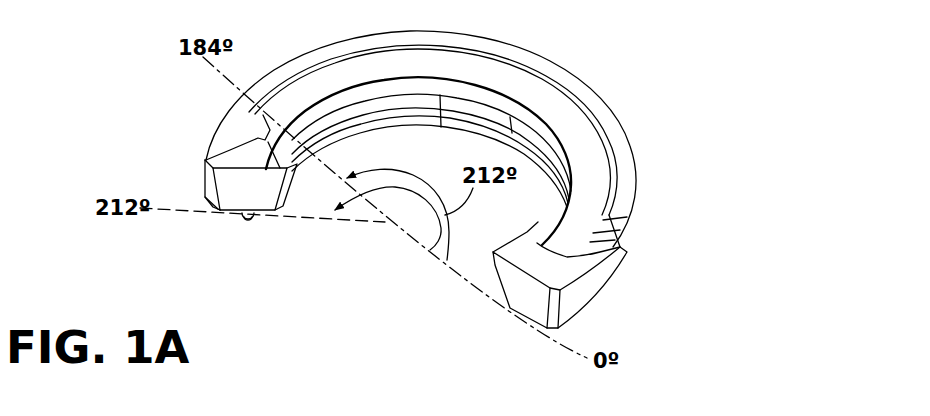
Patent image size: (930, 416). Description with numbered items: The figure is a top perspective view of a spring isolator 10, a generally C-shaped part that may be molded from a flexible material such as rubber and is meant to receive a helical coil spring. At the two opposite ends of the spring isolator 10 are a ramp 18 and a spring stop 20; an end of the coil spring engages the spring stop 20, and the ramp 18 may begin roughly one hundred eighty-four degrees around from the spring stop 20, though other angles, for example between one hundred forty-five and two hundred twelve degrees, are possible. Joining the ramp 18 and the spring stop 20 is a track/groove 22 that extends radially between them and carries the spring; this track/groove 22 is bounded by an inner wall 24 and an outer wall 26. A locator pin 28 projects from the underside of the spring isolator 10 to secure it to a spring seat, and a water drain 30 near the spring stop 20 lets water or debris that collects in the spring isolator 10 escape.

The spring isolator 10 is at (655, 62).
The ramp 18 is at (243, 170).
The spring stop 20 is at (551, 260).
The track/groove 22 is at (587, 148).
The inner wall 24 is at (483, 90).
The outer wall 26 is at (500, 54).
The locator pin 28 is at (247, 230).
The water drain 30 is at (622, 252).